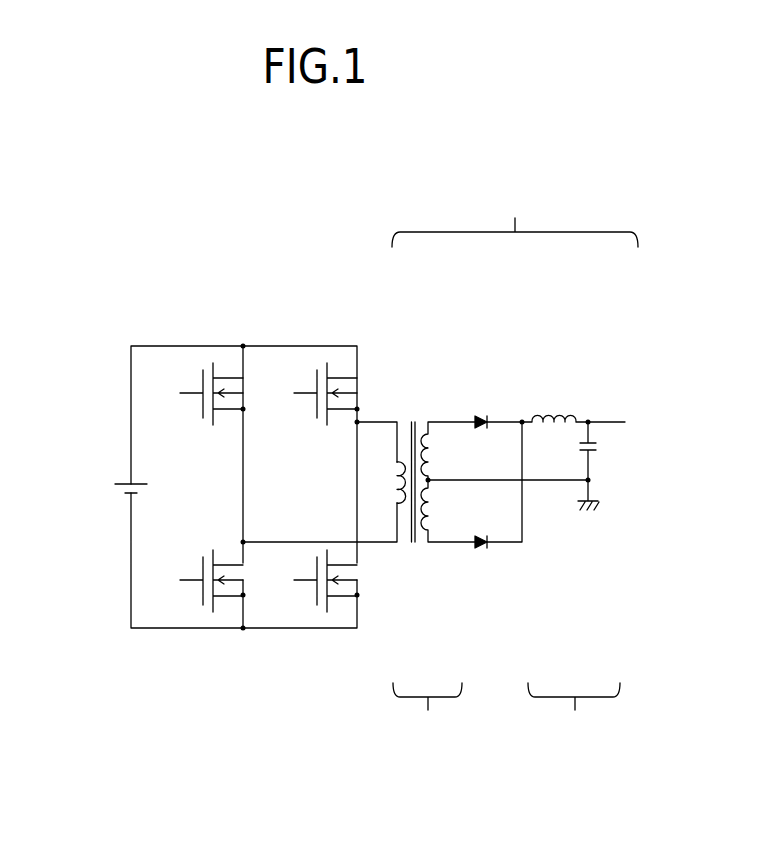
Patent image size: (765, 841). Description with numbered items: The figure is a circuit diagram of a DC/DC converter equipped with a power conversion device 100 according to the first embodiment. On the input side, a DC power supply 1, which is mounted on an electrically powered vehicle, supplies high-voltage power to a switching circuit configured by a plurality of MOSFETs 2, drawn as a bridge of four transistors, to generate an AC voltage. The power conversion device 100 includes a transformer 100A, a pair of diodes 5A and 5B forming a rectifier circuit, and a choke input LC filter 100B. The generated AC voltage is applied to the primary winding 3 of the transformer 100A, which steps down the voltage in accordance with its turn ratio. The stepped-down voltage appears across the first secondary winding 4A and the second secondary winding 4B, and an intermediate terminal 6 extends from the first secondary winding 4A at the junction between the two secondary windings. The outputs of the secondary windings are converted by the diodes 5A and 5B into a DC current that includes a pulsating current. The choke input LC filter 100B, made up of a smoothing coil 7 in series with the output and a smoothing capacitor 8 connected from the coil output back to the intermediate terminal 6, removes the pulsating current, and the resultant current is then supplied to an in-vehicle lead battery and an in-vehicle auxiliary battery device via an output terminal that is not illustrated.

The DC power supply 1 is at (123, 480).
The MOSFET 2 is at (222, 362).
The primary winding 3 is at (391, 468).
The first secondary winding 4A is at (432, 456).
The second secondary winding 4B is at (428, 532).
The diode 5A is at (482, 410).
The diode 5B is at (495, 548).
The intermediate terminal 6 is at (432, 483).
The smoothing coil 7 is at (560, 412).
The smoothing capacitor 8 is at (600, 447).
The power conversion device 100 is at (494, 208).
The transformer 100A is at (397, 758).
The choke input LC filter 100B is at (544, 758).